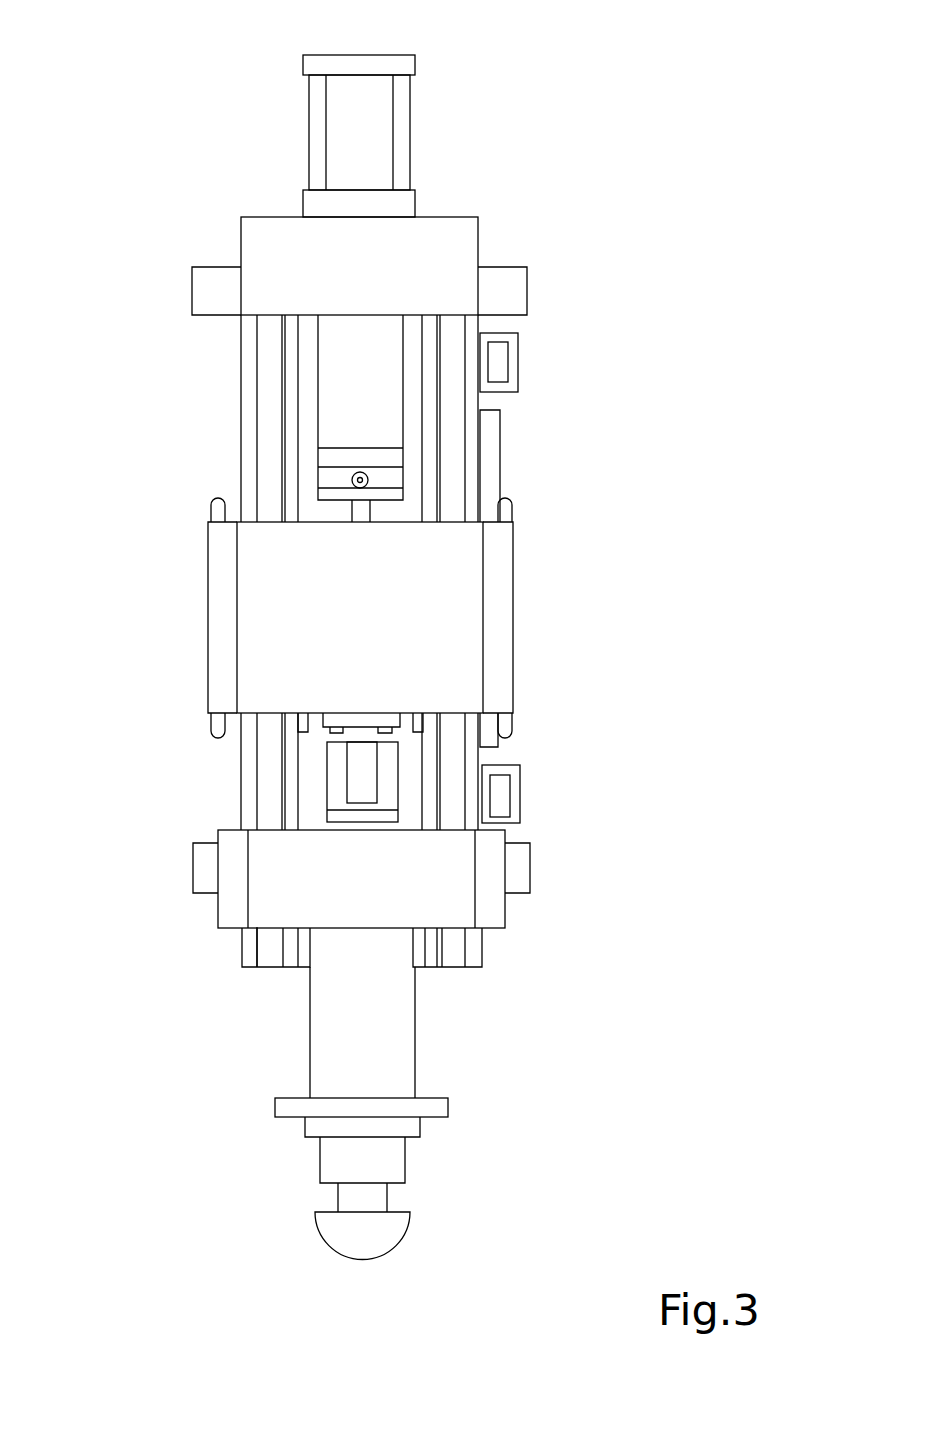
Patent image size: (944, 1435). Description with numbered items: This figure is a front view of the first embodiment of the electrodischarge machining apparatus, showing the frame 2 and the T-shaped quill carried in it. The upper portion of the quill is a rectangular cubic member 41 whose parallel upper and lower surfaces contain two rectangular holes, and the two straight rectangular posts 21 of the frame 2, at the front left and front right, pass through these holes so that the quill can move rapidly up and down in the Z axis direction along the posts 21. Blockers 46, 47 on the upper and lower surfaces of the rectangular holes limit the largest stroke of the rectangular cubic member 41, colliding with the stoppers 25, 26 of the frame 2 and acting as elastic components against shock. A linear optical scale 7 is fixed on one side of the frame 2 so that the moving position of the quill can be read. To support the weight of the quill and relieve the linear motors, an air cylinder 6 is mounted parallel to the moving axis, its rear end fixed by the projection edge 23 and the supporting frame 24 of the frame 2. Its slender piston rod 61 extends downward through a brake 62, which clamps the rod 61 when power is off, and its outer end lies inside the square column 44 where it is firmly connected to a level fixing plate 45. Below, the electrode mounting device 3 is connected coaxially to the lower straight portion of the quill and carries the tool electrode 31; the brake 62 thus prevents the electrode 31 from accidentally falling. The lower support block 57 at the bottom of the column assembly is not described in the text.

The frame 2 is at (458, 233).
The electrode mounting device 3 is at (425, 1108).
The air cylinder 6 is at (360, 380).
The linear optical scale 7 is at (233, 445).
The straight rectangular posts 21 is at (250, 419).
The projection edge 23 is at (390, 65).
The supporting frame 24 is at (400, 133).
The stopper 25 is at (508, 292).
The stopper 26 is at (518, 865).
The tool electrode 31 is at (370, 1237).
The rectangular cubic member 41 is at (440, 598).
The square column 44 is at (388, 1003).
The level fixing plate 45 is at (360, 815).
The blocker 46 is at (507, 510).
The blocker 47 is at (505, 728).
The lower support block 57 is at (310, 880).
The piston rod 61 is at (358, 763).
The brake 62 is at (345, 478).